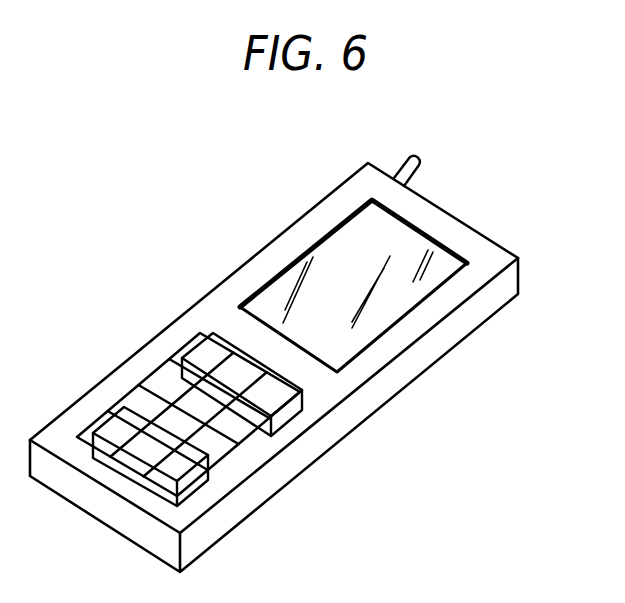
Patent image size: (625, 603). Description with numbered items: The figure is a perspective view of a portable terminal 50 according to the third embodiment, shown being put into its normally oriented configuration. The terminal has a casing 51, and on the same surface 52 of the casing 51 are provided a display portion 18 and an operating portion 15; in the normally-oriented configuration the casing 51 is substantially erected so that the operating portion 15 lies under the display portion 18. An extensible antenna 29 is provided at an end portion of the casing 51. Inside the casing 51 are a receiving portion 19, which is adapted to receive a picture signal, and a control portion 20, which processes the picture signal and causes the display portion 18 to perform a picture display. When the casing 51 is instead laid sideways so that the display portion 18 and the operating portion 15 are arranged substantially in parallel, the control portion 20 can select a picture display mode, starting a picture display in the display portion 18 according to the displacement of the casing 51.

The portable terminal 50 is at (223, 220).
The casing 51 is at (182, 312).
The surface 52 is at (375, 357).
The display portion 18 is at (395, 288).
The extensible antenna 29 is at (418, 168).
The operating portion 15 is at (128, 393).
The receiving portion 19 is at (123, 477).
The control portion 20 is at (297, 416).